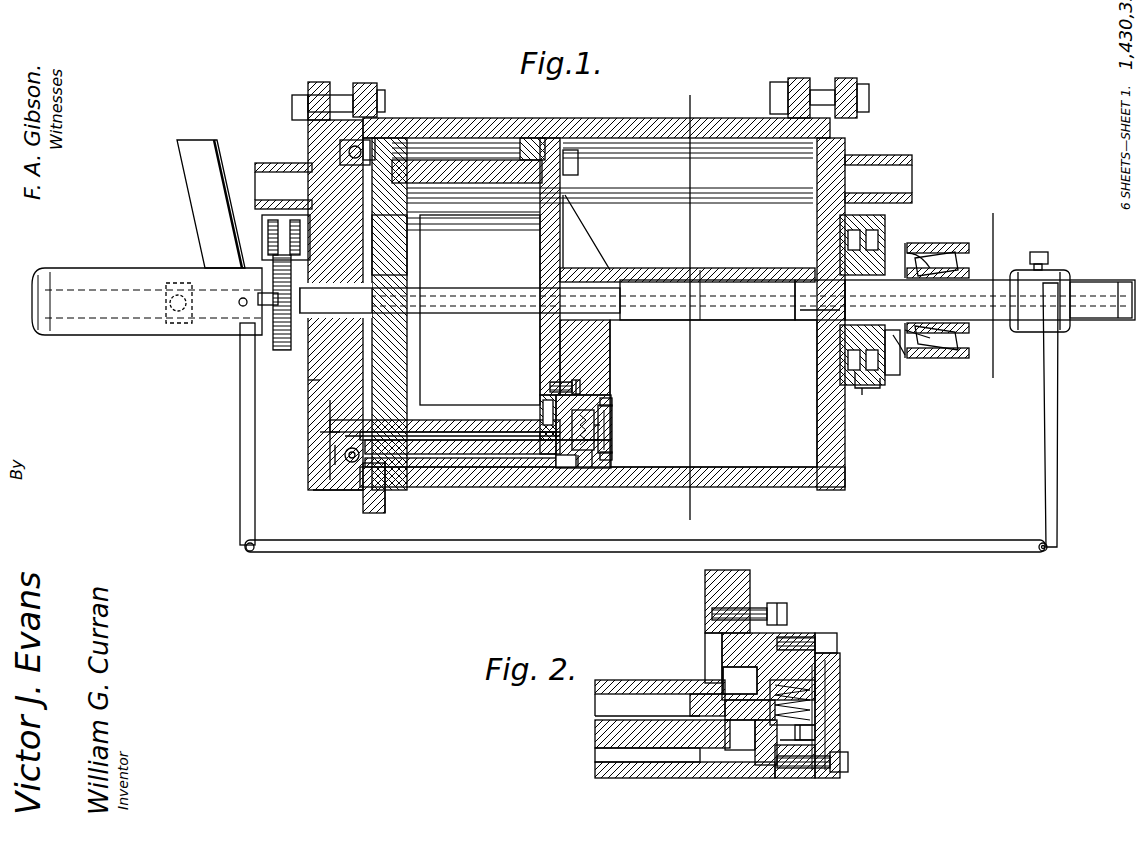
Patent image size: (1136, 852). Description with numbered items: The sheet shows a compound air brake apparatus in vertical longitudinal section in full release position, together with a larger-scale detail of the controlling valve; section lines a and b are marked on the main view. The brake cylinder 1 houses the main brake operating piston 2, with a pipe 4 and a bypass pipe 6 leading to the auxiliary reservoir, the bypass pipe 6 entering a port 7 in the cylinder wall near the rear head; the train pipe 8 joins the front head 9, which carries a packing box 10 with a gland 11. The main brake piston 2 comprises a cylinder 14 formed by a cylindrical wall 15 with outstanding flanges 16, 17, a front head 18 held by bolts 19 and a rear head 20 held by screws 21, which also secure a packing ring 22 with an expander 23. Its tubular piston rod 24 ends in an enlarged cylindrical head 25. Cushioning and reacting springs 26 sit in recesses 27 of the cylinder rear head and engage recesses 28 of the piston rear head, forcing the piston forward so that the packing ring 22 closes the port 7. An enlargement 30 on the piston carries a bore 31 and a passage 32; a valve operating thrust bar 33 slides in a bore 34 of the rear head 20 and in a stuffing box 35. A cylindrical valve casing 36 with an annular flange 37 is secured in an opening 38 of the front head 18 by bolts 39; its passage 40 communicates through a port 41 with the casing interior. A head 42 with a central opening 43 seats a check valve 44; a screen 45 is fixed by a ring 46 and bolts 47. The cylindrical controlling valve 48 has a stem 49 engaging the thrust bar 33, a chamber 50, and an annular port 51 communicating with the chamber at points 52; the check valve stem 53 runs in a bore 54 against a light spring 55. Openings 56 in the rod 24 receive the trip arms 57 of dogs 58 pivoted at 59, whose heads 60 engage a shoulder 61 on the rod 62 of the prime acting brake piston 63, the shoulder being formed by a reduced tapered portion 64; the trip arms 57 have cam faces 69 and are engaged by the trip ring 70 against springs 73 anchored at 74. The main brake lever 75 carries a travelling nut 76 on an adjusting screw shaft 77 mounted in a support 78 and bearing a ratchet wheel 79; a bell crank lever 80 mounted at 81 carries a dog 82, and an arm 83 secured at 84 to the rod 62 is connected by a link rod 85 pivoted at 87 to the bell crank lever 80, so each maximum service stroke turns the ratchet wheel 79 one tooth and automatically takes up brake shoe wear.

In FIG. 1, the brake cylinder 1 is at (612, 120).
In FIG. 1, the main brake operating piston 2 is at (460, 162).
In FIG. 1, the pipe 4 is at (280, 180).
In FIG. 1, the bypass pipe 6 is at (375, 500).
In FIG. 1, the port 7 is at (386, 492).
In FIG. 1, the train pipe 8 is at (895, 158).
In FIG. 1, the front head 9 is at (842, 140).
In FIG. 1, the packing box 10 is at (862, 382).
In FIG. 1, the gland 11 is at (876, 392).
In FIG. 1, the cylinder 14 is at (480, 310).
In FIG. 1, the cylindrical wall 15 is at (420, 142).
In FIG. 1, the outstanding flange 16 is at (532, 138).
In FIG. 1, the outstanding flange 17 is at (375, 138).
In FIG. 1, the front head 18 is at (575, 240).
In FIG. 1, the bolts 19 is at (578, 162).
In FIG. 1, the rear head 20 is at (330, 412).
In FIG. 1, the screws 21 is at (340, 152).
In FIG. 1, the packing ring 22 is at (352, 465).
In FIG. 1, the expander 23 is at (325, 474).
In FIG. 1, the piston rod 24 is at (705, 270).
In FIG. 1, the enlarged cylindrical head 25 is at (958, 245).
In FIG. 1, the cushioning and reacting springs 26 is at (268, 228).
In FIG. 1, the recesses 27 is at (290, 240).
In FIG. 1, the recesses 28 is at (312, 384).
In FIG. 1, the enlargement 30 is at (455, 455).
In FIG. 1, the bore 31 is at (440, 420).
In FIG. 1, the passage 32 is at (510, 468).
In FIG. 1, the valve operating thrust bar 33 is at (475, 435).
In FIG. 2, the valve operating thrust bar 33 is at (636, 690).
In FIG. 1, the bore 34 is at (340, 452).
In FIG. 1, the stuffing box 35 is at (335, 430).
In FIG. 1, the cylindrical valve casing 36 is at (590, 398).
In FIG. 2, the cylindrical valve casing 36 is at (768, 640).
In FIG. 1, the annular flange 37 is at (565, 382).
In FIG. 2, the annular flange 37 is at (760, 604).
In FIG. 1, the opening 38 is at (545, 396).
In FIG. 2, the opening 38 is at (710, 635).
In FIG. 1, the bolts 39 is at (580, 392).
In FIG. 2, the bolts 39 is at (780, 612).
In FIG. 1, the passage 40 is at (566, 470).
In FIG. 2, the passage 40 is at (728, 755).
In FIG. 1, the port 41 is at (580, 470).
In FIG. 1, the head 42 is at (612, 410).
In FIG. 2, the head 42 is at (840, 662).
In FIG. 2, the central opening 43 is at (816, 730).
In FIG. 1, the check valve 44 is at (596, 430).
In FIG. 2, the check valve 44 is at (818, 708).
In FIG. 1, the screen 45 is at (612, 418).
In FIG. 2, the screen 45 is at (840, 680).
In FIG. 1, the ring 46 is at (608, 462).
In FIG. 2, the ring 46 is at (812, 640).
In FIG. 1, the bolts 47 is at (608, 398).
In FIG. 2, the bolts 47 is at (838, 640).
In FIG. 1, the cylindrical controlling valve 48 is at (543, 408).
In FIG. 2, the cylindrical controlling valve 48 is at (778, 780).
In FIG. 1, the stem 49 is at (548, 470).
In FIG. 2, the stem 49 is at (700, 694).
In FIG. 1, the chamber 50 is at (600, 445).
In FIG. 2, the chamber 50 is at (835, 688).
In FIG. 1, the port 51 is at (592, 468).
In FIG. 2, the port 51 is at (818, 742).
In FIG. 1, the communication points 52 is at (600, 468).
In FIG. 2, the stem 53 is at (762, 765).
In FIG. 2, the bore 54 is at (727, 700).
In FIG. 1, the light spring 55 is at (600, 428).
In FIG. 2, the light spring 55 is at (820, 722).
In FIG. 1, the openings 56 is at (892, 378).
In FIG. 1, the trip arms 57 is at (928, 345).
In FIG. 1, the dogs 58 is at (960, 342).
In FIG. 1, the pivot 59 is at (920, 280).
In FIG. 1, the heads 60 is at (958, 262).
In FIG. 1, the shoulder 61 is at (820, 285).
In FIG. 1, the rod 62 is at (715, 300).
In FIG. 1, the prime acting brake piston 63 is at (400, 266).
In FIG. 1, the reduced tapered portion 64 is at (813, 306).
In FIG. 1, the cam faces 69 is at (845, 258).
In FIG. 1, the trip ring 70 is at (905, 355).
In FIG. 1, the springs 73 is at (918, 246).
In FIG. 1, the spring anchorage 74 is at (930, 250).
In FIG. 1, the main brake lever 75 is at (178, 188).
In FIG. 1, the travelling nut 76 is at (175, 312).
In FIG. 1, the adjusting screw shaft 77 is at (100, 322).
In FIG. 1, the support 78 is at (62, 320).
In FIG. 1, the ratchet wheel 79 is at (282, 350).
In FIG. 1, the bell crank lever 80 is at (240, 428).
In FIG. 1, the mounting 81 is at (240, 306).
In FIG. 1, the dog 82 is at (258, 296).
In FIG. 1, the arm 83 is at (1050, 426).
In FIG. 1, the securing point 84 is at (1058, 272).
In FIG. 1, the link rod 85 is at (725, 540).
In FIG. 1, the pivotal connection 87 is at (249, 552).
In FIG. 1, the section line a is at (993, 292).
In FIG. 1, the section line b is at (689, 300).